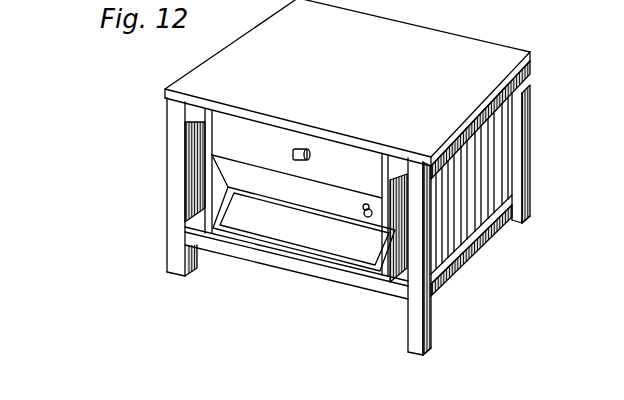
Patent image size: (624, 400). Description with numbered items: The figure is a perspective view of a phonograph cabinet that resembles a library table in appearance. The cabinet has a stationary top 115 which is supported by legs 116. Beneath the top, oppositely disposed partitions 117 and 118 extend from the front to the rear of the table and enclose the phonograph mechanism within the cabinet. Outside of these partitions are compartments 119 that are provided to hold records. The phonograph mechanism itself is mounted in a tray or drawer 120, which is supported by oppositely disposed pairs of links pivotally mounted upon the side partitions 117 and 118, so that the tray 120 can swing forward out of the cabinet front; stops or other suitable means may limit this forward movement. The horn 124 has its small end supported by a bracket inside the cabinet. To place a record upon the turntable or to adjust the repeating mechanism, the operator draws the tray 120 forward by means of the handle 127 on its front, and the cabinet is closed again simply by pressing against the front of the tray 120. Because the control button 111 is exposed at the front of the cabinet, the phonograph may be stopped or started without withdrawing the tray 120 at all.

The stationary top 115 is at (485, 48).
The legs 116 is at (178, 243).
The partition 117 is at (207, 143).
The partition 118 is at (386, 170).
The compartments 119 is at (200, 217).
The tray 120 is at (262, 190).
The horn 124 is at (283, 240).
The control button 111 is at (362, 208).
The handle 127 is at (303, 148).